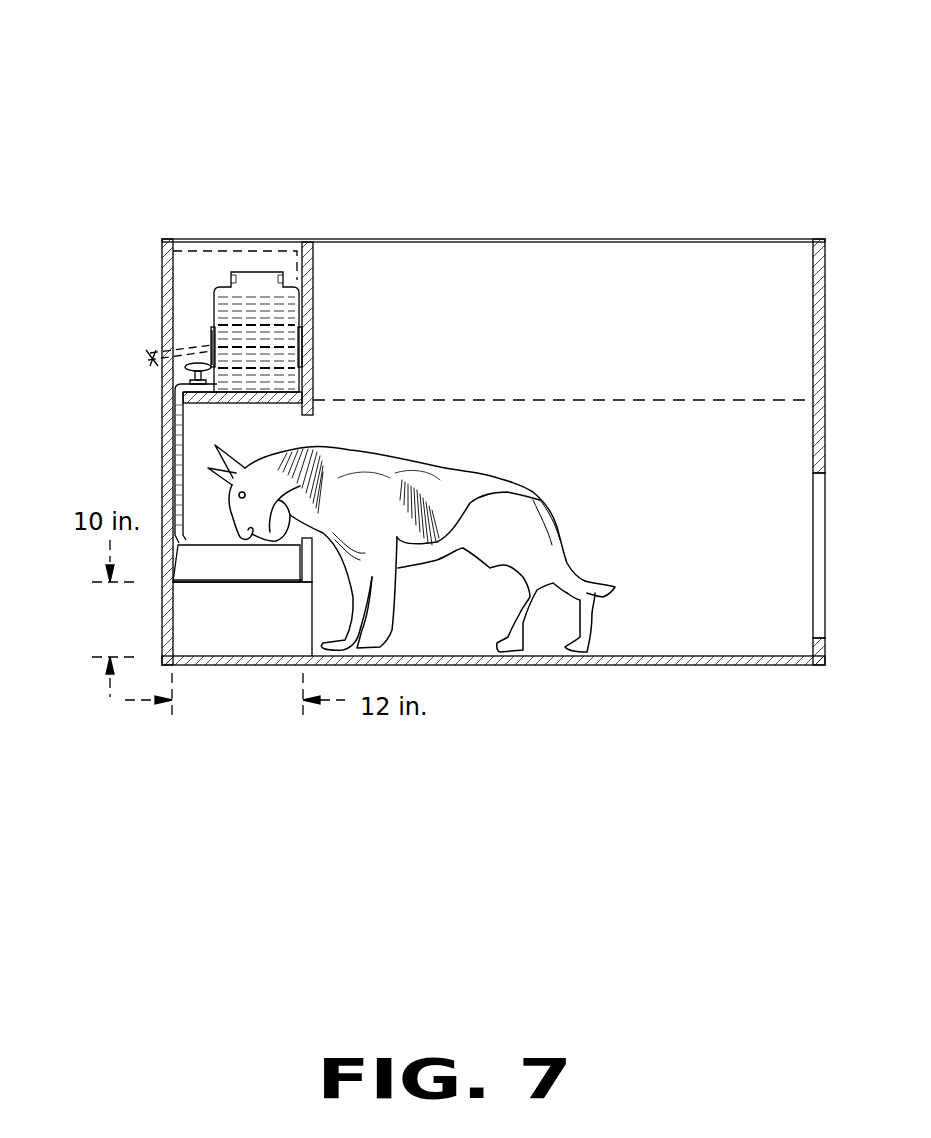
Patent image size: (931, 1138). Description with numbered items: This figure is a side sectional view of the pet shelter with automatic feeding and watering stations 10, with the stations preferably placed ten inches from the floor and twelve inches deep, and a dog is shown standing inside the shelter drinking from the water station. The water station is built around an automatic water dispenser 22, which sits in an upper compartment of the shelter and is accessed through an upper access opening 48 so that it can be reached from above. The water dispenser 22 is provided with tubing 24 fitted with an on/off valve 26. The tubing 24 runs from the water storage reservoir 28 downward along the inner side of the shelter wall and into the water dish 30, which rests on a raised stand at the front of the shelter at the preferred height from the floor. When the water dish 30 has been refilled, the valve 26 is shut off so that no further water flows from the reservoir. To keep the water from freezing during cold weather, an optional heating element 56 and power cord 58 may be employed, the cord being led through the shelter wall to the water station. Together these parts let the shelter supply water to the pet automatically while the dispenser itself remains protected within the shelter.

The pet shelter with automatic feeding and watering stations 10 is at (692, 115).
The automatic water dispenser 22 is at (267, 318).
The tubing 24 is at (182, 502).
The on/off valve 26 is at (203, 365).
The water storage reservoir 28 is at (212, 328).
The water dish 30 is at (183, 557).
The upper access opening 48 is at (188, 253).
The heating element 56 is at (302, 340).
The power cord 58 is at (210, 346).